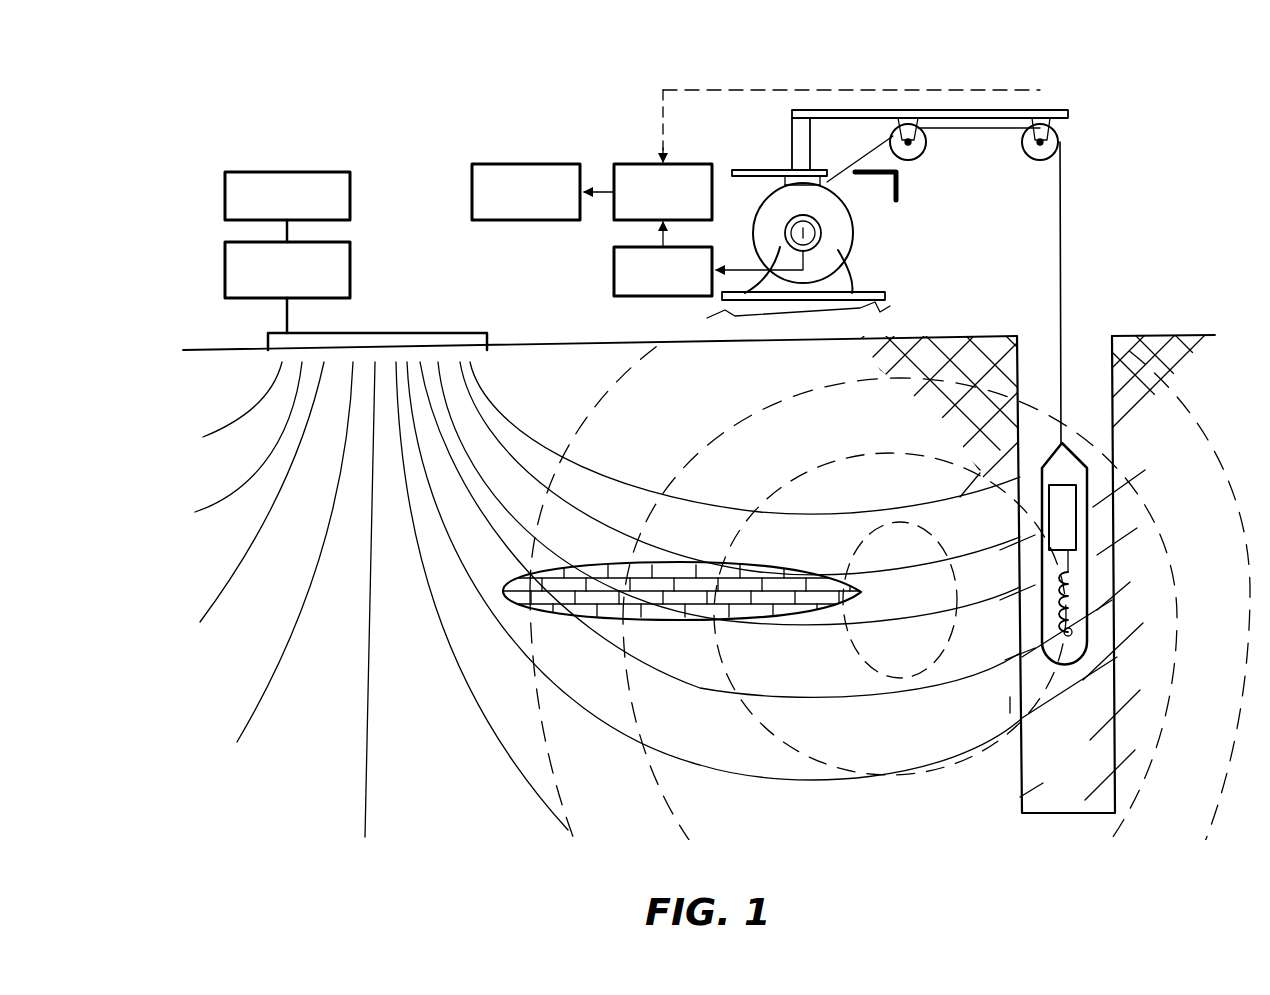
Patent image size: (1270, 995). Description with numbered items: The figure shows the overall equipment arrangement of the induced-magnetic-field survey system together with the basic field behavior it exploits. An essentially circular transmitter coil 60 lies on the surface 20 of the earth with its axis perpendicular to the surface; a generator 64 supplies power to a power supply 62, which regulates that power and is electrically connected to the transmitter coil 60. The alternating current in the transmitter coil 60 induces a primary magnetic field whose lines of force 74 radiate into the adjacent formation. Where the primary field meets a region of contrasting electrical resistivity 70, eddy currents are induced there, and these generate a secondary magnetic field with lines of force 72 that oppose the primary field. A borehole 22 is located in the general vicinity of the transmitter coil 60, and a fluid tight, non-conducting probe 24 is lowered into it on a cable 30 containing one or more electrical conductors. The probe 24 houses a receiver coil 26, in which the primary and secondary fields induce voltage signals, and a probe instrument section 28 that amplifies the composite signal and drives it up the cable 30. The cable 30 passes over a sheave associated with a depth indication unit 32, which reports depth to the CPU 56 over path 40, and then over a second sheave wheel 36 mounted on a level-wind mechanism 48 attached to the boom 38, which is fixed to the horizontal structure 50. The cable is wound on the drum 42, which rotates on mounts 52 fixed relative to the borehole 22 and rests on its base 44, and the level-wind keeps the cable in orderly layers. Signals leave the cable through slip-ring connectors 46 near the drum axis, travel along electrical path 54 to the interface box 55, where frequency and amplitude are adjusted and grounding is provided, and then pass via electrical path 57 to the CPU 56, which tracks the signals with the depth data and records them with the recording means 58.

The surface of the earth 20 is at (1168, 335).
The borehole 22 is at (1113, 462).
The probe 24 is at (1090, 585).
The receiver coil 26 is at (1070, 632).
The probe instrument section 28 is at (1077, 523).
The cable 30 is at (1063, 222).
The depth indication unit 32 is at (1062, 130).
The second sheave wheel 36 is at (918, 158).
The boom 38 is at (988, 112).
The path 40 is at (920, 88).
The drum 42 is at (840, 255).
The winch base 44 is at (882, 303).
The slip-ring connectors 46 is at (803, 232).
The level-wind mechanism 48 is at (907, 117).
The horizontal structure 50 is at (768, 170).
The mounts 52 is at (723, 313).
The electrical path 54 is at (782, 283).
The interface box 55 is at (614, 278).
The CPU 56 is at (633, 163).
The electrical path 57 is at (657, 237).
The recording means 58 is at (503, 163).
The transmitter coil 60 is at (455, 333).
The power supply 62 is at (351, 252).
The generator 64 is at (351, 178).
The region of contrasting electrical resistivity 70 is at (682, 596).
The lines of force of secondary magnetic field 72 is at (811, 501).
The lines of force of primary magnetic field 74 is at (480, 430).